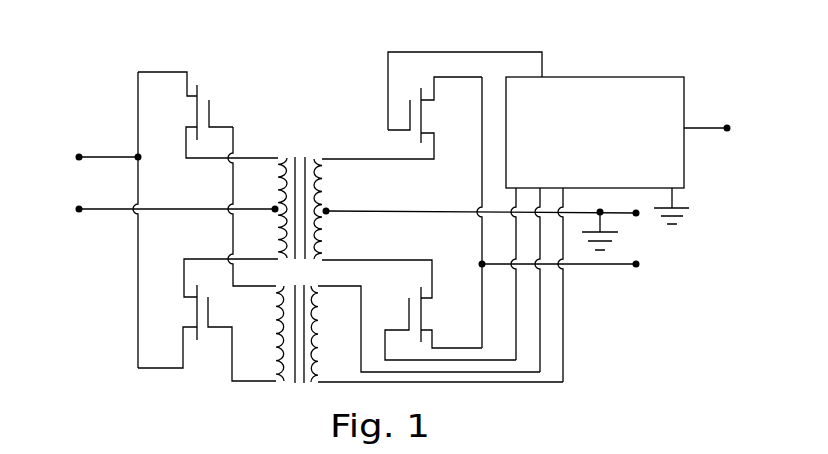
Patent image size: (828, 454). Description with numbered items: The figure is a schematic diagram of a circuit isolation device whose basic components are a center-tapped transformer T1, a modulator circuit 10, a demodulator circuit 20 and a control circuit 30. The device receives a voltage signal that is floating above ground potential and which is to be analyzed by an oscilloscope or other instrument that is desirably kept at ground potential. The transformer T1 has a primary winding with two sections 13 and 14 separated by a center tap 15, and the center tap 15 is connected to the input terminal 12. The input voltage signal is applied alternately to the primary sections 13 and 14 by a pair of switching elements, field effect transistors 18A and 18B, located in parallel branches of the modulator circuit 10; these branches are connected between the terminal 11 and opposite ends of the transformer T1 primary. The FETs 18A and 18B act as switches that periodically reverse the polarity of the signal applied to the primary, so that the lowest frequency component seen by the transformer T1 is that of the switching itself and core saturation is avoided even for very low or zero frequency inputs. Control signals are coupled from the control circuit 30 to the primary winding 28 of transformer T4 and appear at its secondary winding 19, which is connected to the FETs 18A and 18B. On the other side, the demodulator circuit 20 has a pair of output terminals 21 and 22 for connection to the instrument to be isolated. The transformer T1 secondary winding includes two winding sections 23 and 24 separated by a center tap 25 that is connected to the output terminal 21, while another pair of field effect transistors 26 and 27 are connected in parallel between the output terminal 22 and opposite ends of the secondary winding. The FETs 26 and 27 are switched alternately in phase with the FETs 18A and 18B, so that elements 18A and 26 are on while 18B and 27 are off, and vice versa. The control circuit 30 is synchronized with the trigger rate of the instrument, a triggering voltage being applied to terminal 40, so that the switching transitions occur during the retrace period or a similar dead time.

The modulator circuit 10 is at (269, 113).
The terminal 11 is at (80, 154).
The input terminal 12 is at (79, 210).
The primary winding section 13 is at (277, 179).
The primary winding section 14 is at (277, 241).
The center tap 15 is at (273, 208).
The field effect transistor 18A is at (194, 114).
The field effect transistor 18B is at (194, 316).
The secondary winding 19 is at (276, 326).
The demodulator circuit 20 is at (509, 35).
The output terminal 21 is at (636, 215).
The output terminal 22 is at (636, 267).
The secondary winding section 23 is at (327, 188).
The secondary winding section 24 is at (327, 238).
The center tap 25 is at (329, 213).
The field effect transistor 26 is at (430, 117).
The field effect transistor 27 is at (427, 313).
The primary winding 28 is at (322, 313).
The control circuit 30 is at (606, 111).
The terminal 40 is at (727, 126).
The center-tapped transformer T1 is at (301, 148).
The transformer T4 is at (300, 392).